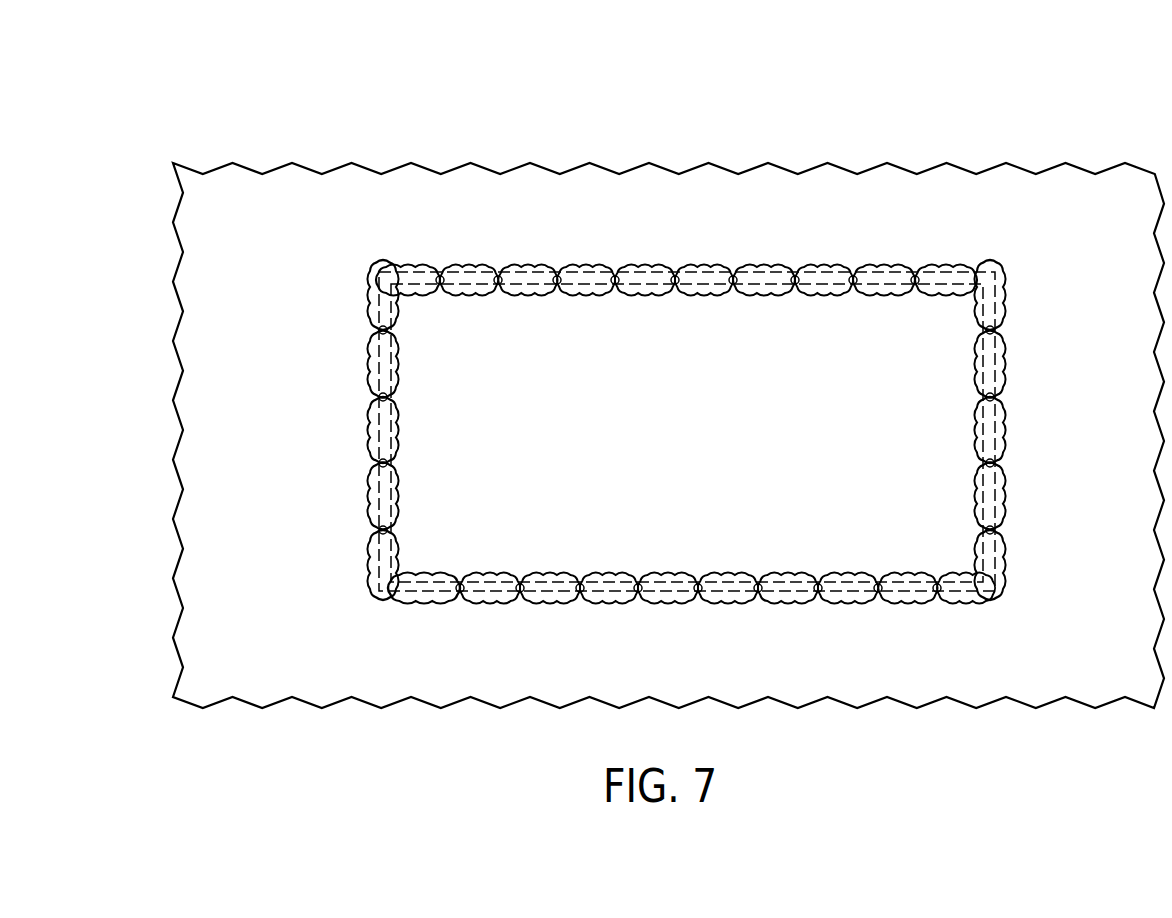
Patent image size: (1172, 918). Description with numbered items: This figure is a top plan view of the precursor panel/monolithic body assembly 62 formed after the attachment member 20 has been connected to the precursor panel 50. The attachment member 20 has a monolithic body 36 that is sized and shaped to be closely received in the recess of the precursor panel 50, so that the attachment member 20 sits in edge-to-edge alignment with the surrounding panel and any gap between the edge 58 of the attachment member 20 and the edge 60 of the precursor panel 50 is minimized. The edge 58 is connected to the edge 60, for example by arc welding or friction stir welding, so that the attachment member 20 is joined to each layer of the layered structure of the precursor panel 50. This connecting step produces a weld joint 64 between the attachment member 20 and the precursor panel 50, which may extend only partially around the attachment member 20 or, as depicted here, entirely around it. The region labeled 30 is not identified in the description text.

The bonded assembly 62 is at (668, 368).
The substrate panel 50 is at (957, 180).
The perimeter bond region 30 is at (752, 406).
The expanded foam bead 64 is at (703, 262).
The outer adhesive line 58 is at (582, 285).
The inner adhesive line 60 is at (517, 282).
The patch area 20 is at (627, 438).
The bond surface 36 is at (698, 440).